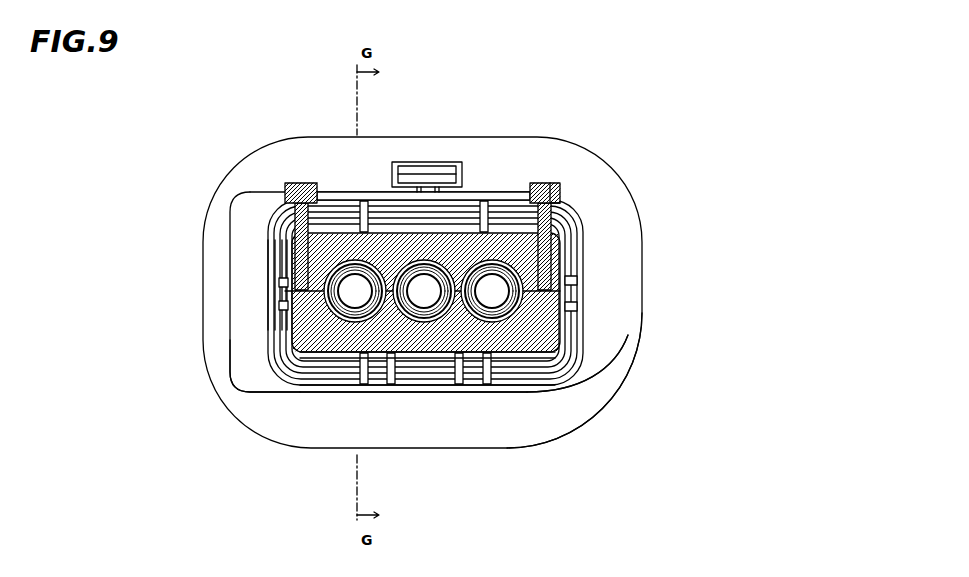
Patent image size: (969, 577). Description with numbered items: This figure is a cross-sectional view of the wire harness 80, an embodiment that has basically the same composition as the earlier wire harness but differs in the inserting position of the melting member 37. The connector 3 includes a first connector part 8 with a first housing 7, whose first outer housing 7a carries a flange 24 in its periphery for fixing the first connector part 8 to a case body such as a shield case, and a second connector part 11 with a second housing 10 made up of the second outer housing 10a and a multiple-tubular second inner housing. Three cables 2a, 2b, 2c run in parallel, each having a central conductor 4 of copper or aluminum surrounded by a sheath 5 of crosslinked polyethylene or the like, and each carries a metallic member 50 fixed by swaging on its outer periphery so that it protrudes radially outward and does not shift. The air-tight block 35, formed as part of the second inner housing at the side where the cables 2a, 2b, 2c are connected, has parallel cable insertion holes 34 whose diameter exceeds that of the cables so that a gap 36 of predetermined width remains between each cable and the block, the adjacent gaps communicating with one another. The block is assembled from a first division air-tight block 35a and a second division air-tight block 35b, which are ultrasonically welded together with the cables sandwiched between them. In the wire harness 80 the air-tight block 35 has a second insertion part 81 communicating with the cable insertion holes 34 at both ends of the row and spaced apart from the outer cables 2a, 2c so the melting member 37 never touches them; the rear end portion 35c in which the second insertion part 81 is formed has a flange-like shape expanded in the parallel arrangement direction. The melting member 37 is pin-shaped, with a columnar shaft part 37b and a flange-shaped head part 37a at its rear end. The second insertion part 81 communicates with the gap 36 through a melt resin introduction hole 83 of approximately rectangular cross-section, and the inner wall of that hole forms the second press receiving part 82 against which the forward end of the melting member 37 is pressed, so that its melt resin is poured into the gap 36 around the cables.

The connector 3 is at (182, 129).
The wire harness 80 is at (692, 98).
The first connector part 8 is at (252, 157).
The first housing 7 is at (208, 362).
The first outer housing 7a is at (228, 396).
The flange 24 is at (597, 420).
The cable insertion hole 34 is at (614, 400).
The cable 2a is at (350, 320).
The cable 2b is at (420, 300).
The cable 2c is at (580, 305).
The central conductor 4 is at (570, 245).
The sheath 5 is at (583, 263).
The air-tight block 35 is at (283, 232).
The first division air-tight block 35a is at (275, 325).
The second division air-tight block 35b is at (282, 265).
The rear end portion of the air-tight block 35c is at (378, 232).
The second press receiving part 82 is at (282, 285).
The melt resin introduction hole 83 is at (280, 305).
The second insertion part 81 is at (292, 235).
The melting member 37 is at (305, 183).
The head part 37a is at (557, 197).
The shaft part 37b is at (553, 212).
The second connector part 11 is at (489, 175).
The metallic member 50 is at (403, 340).
The gap 36 is at (330, 380).
The second housing 10 is at (500, 393).
The second outer housing 10a is at (527, 393).